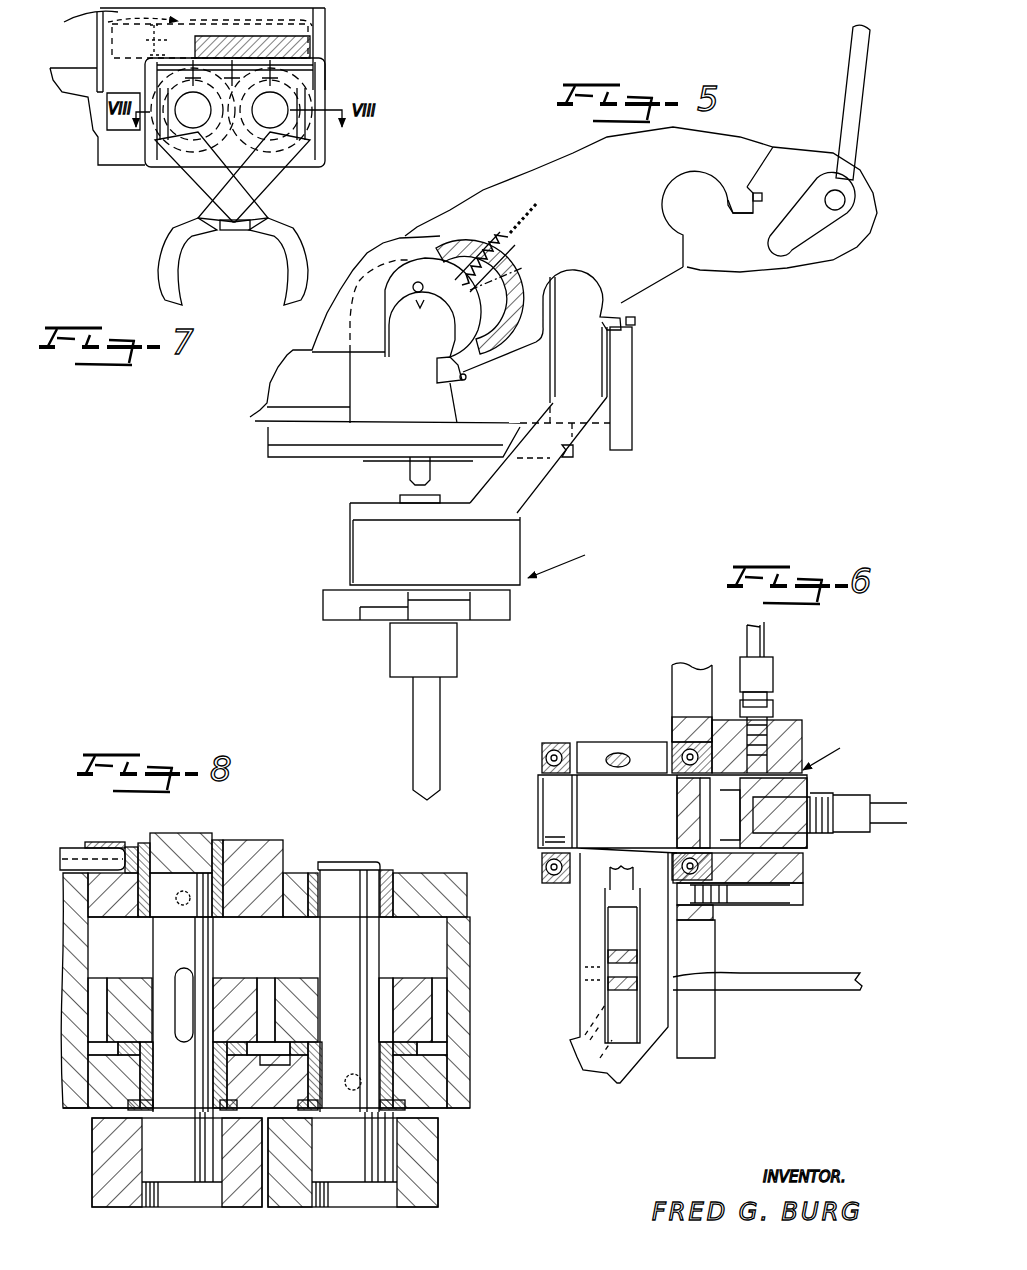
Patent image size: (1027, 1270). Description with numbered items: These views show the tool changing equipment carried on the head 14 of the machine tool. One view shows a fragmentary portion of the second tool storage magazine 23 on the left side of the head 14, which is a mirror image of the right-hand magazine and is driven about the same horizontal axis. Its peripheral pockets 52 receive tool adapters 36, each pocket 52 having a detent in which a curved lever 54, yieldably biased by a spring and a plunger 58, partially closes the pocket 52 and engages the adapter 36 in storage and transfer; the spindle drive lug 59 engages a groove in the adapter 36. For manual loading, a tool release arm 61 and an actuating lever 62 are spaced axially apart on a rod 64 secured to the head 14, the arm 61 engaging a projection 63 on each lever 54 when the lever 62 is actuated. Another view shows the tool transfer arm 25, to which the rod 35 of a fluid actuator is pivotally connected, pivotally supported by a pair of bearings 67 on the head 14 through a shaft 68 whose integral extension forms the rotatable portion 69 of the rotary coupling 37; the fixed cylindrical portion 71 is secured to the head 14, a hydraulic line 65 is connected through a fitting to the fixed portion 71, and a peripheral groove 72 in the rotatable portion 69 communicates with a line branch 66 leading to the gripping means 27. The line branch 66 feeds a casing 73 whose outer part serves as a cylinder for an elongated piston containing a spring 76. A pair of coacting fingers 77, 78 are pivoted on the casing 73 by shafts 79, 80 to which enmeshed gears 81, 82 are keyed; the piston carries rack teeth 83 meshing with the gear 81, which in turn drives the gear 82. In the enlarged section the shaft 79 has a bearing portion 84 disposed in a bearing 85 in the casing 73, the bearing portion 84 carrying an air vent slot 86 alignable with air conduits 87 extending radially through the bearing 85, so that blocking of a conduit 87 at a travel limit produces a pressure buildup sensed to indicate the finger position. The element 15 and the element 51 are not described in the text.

In FIG. 7, the head 14 is at (97, 97).
In FIG. 5, the head 14 is at (322, 387).
In FIG. 6, the head 14 is at (672, 682).
In FIG. 7, the guide member 15 is at (150, 48).
In FIG. 5, the second tool storage magazine 23 is at (624, 210).
In FIG. 5, the tool transfer arm 25 is at (530, 478).
In FIG. 6, the tool transfer arm 25 is at (592, 922).
In FIG. 5, the gripping means 27 is at (560, 559).
In FIG. 6, the rod 35 is at (605, 875).
In FIG. 5, the tool adapter 36 is at (430, 496).
In FIG. 6, the rotary coupling 37 is at (839, 751).
In FIG. 5, the spring 51 is at (487, 232).
In FIG. 5, the peripheral pocket 52 is at (690, 177).
In FIG. 5, the curved lever 54 is at (455, 321).
In FIG. 5, the plunger 58 is at (470, 270).
In FIG. 5, the drive lug 59 is at (408, 472).
In FIG. 5, the tool release arm 61 is at (800, 248).
In FIG. 5, the actuating lever 62 is at (848, 90).
In FIG. 5, the projection 63 is at (757, 193).
In FIG. 5, the rod 64 is at (832, 210).
In FIG. 6, the hydraulic line 65 is at (770, 638).
In FIG. 6, the line branch 66 is at (775, 972).
In FIG. 6, the bearing 67 is at (552, 745).
In FIG. 6, the shaft 68 is at (630, 802).
In FIG. 6, the rotatable portion 69 is at (715, 812).
In FIG. 6, the fixed cylindrical portion 71 is at (802, 735).
In FIG. 6, the peripheral groove 72 is at (803, 864).
In FIG. 7, the casing 73 is at (81, 15).
In FIG. 5, the casing 73 is at (498, 556).
In FIG. 8, the casing 73 is at (412, 885).
In FIG. 7, the spring 76 is at (330, 17).
In FIG. 7, the finger 77 is at (207, 180).
In FIG. 5, the finger 77 is at (497, 612).
In FIG. 8, the finger 77 is at (118, 1200).
In FIG. 7, the finger 78 is at (263, 183).
In FIG. 5, the finger 78 is at (325, 610).
In FIG. 8, the finger 78 is at (420, 1208).
In FIG. 7, the shaft 79 is at (193, 110).
In FIG. 8, the shaft 79 is at (193, 958).
In FIG. 7, the shaft 80 is at (270, 110).
In FIG. 8, the shaft 80 is at (363, 958).
In FIG. 7, the gear 81 is at (158, 132).
In FIG. 8, the gear 81 is at (128, 1000).
In FIG. 7, the gear 82 is at (320, 143).
In FIG. 8, the gear 82 is at (405, 1000).
In FIG. 7, the gear teeth 83 is at (300, 76).
In FIG. 8, the bearing portion 84 is at (195, 845).
In FIG. 8, the bearing 85 is at (230, 850).
In FIG. 8, the air vent slot 86 is at (162, 840).
In FIG. 8, the air conduit 87 is at (68, 848).